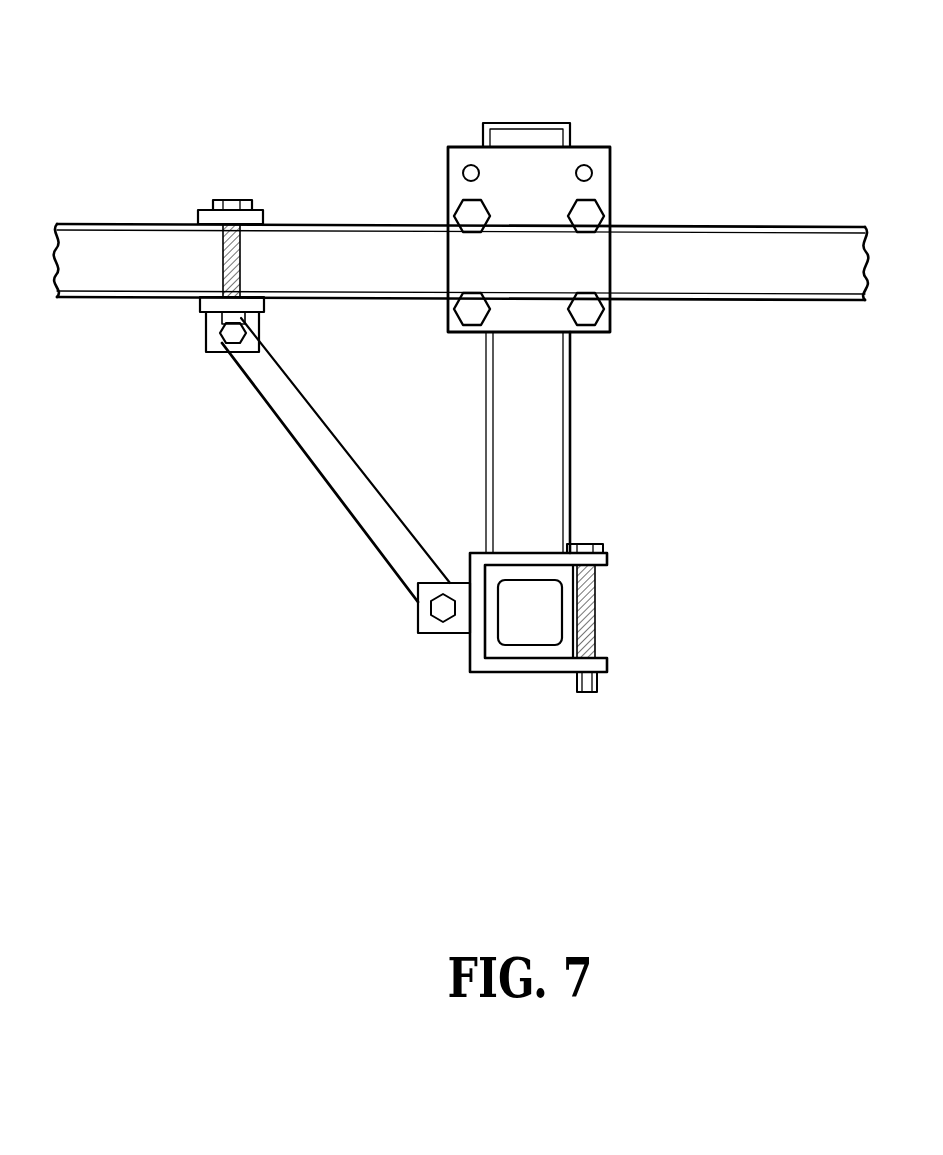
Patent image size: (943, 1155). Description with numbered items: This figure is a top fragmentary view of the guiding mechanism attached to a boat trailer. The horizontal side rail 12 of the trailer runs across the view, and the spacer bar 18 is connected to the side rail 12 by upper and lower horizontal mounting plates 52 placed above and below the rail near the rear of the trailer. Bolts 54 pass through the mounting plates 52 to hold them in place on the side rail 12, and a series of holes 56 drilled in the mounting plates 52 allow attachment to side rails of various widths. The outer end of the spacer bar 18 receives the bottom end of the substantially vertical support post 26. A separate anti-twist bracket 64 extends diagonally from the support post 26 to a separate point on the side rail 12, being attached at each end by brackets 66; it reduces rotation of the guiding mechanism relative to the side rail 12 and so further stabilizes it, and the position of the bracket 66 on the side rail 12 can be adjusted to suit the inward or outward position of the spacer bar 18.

The side rail 12 is at (762, 227).
The spacer bar 18 is at (571, 425).
The support post 26 is at (512, 650).
The mounting plates 52 is at (601, 147).
The bolts 54 is at (470, 300).
The holes 56 is at (585, 165).
The anti-twist bracket 64 is at (340, 503).
The brackets 66 is at (198, 215).